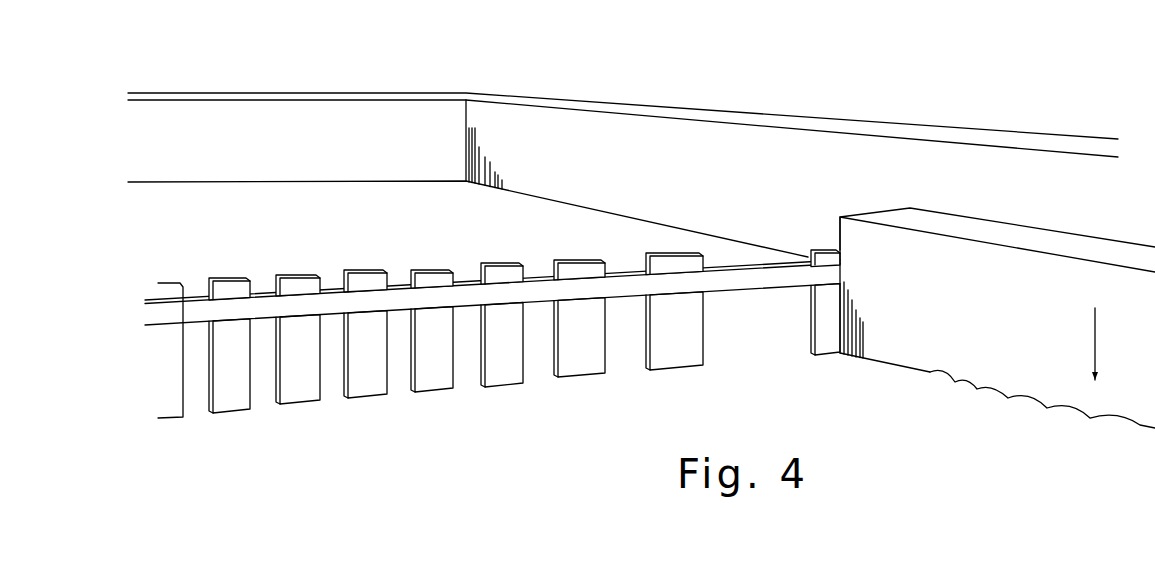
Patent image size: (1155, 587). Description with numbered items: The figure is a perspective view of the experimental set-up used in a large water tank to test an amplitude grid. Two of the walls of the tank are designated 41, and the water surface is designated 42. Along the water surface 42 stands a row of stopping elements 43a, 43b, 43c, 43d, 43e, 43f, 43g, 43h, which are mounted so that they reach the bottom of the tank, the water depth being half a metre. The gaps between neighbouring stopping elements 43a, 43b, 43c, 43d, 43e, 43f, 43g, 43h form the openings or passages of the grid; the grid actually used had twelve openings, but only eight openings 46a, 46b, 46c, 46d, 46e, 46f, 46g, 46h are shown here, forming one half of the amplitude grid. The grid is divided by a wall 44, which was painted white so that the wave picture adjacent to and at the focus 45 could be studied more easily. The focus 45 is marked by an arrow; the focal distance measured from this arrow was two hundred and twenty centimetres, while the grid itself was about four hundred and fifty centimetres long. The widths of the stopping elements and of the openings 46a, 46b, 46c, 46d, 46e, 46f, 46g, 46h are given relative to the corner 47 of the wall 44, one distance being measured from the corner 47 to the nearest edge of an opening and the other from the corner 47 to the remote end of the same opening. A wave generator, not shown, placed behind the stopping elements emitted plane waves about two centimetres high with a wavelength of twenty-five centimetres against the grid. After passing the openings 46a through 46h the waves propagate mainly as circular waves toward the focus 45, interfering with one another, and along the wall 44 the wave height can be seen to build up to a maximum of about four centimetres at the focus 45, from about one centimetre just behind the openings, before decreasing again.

The walls of the tank 41 is at (510, 112).
The water surface 42 is at (492, 323).
The stopping element 43a is at (826, 302).
The stopping element 43b is at (674, 311).
The stopping element 43c is at (579, 318).
The stopping element 43d is at (502, 325).
The stopping element 43e is at (432, 331).
The stopping element 43f is at (365, 334).
The stopping element 43g is at (298, 339).
The stopping element 43h is at (229, 345).
The wall 44 is at (972, 280).
The focus 45 is at (1112, 344).
The opening 46a is at (810, 298).
The opening 46b is at (647, 308).
The opening 46c is at (555, 313).
The opening 46d is at (480, 317).
The opening 46e is at (411, 322).
The opening 46f is at (346, 326).
The opening 46g is at (278, 330).
The opening 46h is at (208, 332).
The corner 47 is at (840, 232).